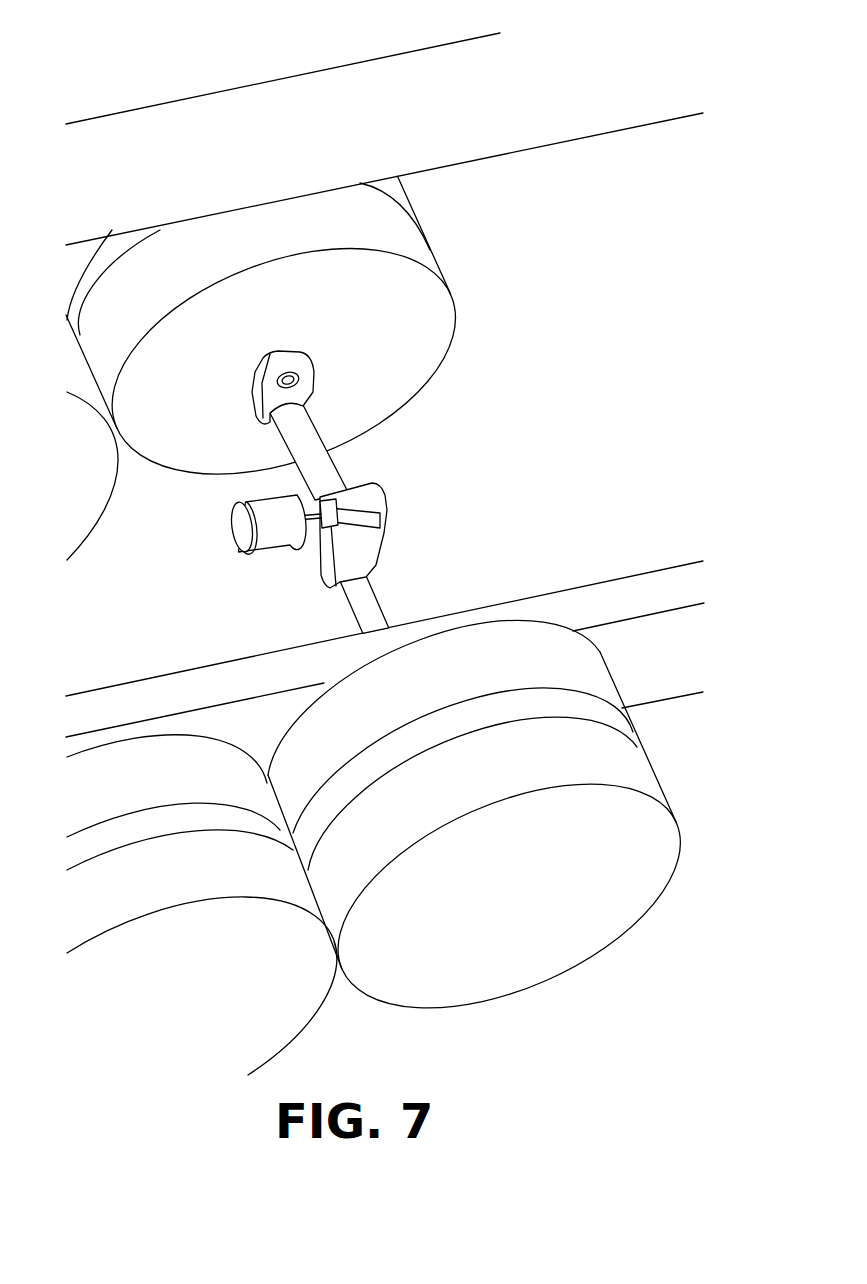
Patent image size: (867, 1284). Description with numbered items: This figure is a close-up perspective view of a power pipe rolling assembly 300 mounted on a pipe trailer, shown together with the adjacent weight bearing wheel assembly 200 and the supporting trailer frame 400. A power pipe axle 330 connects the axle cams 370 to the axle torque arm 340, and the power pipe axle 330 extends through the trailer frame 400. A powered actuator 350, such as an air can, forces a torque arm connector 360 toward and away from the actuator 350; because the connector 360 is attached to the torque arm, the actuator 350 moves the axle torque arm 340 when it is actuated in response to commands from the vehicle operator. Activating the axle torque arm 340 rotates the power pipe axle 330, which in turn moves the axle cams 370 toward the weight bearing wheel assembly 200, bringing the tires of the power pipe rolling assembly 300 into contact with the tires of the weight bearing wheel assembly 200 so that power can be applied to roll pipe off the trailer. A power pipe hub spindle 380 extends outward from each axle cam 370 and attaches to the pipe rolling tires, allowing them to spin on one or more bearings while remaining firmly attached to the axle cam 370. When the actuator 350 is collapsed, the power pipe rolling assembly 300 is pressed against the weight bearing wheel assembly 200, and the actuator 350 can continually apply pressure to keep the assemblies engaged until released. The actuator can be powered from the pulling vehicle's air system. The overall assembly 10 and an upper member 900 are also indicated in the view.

The roller assembly 10 is at (605, 1087).
The weight bearing wheel assembly 200 is at (174, 1053).
The power pipe rolling wheel assembly 300 is at (604, 983).
The power pipe axle 330 is at (360, 606).
The axle torque arm 340 is at (373, 543).
The powered actuator 350 is at (240, 542).
The torque arm connector 360 is at (322, 503).
The axle cam 370 is at (312, 394).
The power pipe hub spindle 380 is at (291, 374).
The trailer frame 400 is at (722, 629).
The upper support beam 900 is at (240, 88).